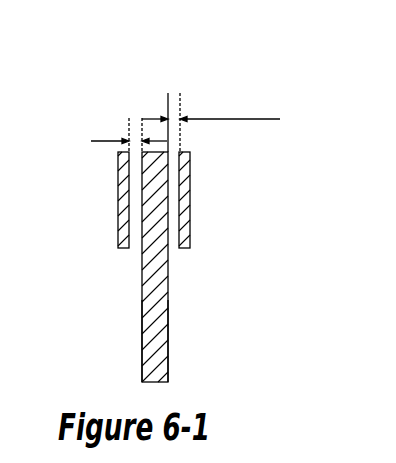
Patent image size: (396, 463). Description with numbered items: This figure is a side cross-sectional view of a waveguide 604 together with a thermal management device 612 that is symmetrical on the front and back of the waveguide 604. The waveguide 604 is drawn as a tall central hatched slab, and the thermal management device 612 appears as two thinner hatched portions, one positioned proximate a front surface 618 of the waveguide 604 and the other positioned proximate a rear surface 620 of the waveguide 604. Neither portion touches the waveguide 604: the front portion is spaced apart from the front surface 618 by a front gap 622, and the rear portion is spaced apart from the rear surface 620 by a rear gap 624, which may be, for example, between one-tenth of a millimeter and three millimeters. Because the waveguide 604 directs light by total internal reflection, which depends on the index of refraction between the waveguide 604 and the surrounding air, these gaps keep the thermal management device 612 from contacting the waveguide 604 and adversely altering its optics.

The waveguide 604 is at (163, 308).
The thermal management device 612 is at (128, 198).
The front surface 618 is at (168, 357).
The rear surface 620 is at (142, 360).
The front gap 622 is at (280, 119).
The rear gap 624 is at (91, 141).